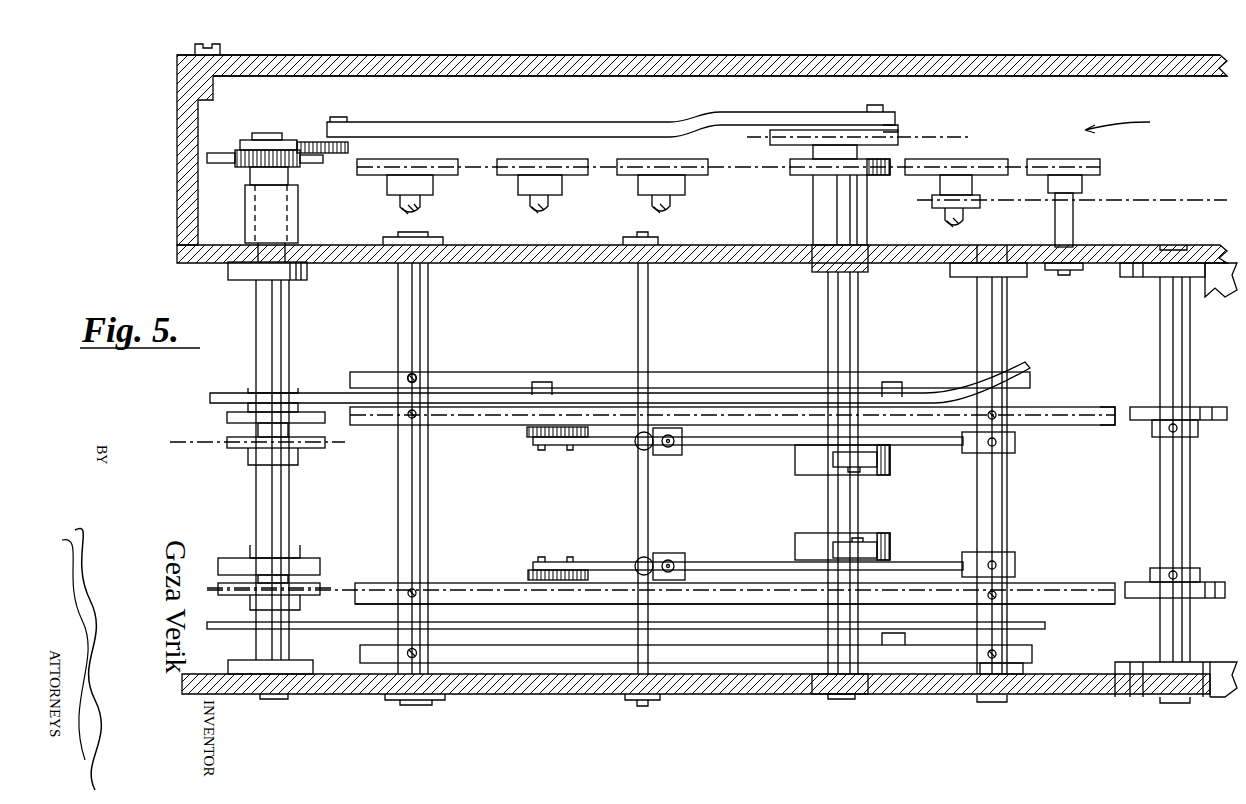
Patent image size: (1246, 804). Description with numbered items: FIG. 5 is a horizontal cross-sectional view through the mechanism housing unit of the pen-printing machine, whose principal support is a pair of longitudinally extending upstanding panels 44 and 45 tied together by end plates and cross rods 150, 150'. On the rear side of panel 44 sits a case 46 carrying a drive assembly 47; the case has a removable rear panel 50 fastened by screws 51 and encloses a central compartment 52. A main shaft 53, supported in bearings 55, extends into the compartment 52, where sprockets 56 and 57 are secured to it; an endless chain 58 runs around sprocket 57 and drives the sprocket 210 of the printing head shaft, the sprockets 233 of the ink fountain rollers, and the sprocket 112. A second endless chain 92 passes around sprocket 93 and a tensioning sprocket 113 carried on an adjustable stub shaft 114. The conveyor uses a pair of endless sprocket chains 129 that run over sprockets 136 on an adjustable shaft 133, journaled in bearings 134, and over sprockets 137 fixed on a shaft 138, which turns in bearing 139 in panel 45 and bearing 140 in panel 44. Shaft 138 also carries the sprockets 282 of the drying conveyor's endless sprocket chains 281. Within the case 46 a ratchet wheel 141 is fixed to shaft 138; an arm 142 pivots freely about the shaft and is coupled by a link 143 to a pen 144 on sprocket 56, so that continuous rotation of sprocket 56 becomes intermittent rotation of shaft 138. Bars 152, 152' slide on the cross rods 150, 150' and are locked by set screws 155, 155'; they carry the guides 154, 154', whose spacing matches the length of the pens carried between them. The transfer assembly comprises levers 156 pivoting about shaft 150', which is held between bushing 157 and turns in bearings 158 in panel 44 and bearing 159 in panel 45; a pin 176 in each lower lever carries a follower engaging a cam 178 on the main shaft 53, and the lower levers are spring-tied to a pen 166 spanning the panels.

The case 46 is at (618, 56).
The removable rear panel 50 is at (401, 55).
The central compartment 52 is at (508, 86).
The screws 51 is at (216, 46).
The upstanding panel 44 is at (690, 263).
The upstanding panel 45 is at (710, 694).
The link 143 is at (600, 104).
The pen 144 is at (893, 98).
The sprocket 56 is at (770, 141).
The sprocket 57 is at (800, 176).
The bearings 55 is at (868, 268).
The endless chain 58 is at (727, 168).
The sprocket 233 is at (452, 176).
The sprocket 210 is at (500, 178).
The sprocket 112 is at (985, 160).
The sprocket 93 is at (975, 208).
The sprocket 113 is at (1080, 156).
The adjustable stub shaft 114 is at (1074, 232).
The endless chain 92 is at (1195, 200).
The drive assembly 47 is at (1134, 120).
The bearings 158 is at (990, 246).
The bearings 134 is at (1178, 250).
The arm 142 is at (308, 142).
The ratchet wheel 141 is at (240, 170).
The bearing 140 is at (290, 248).
The shaft 138 is at (282, 336).
The bearing 139 is at (266, 696).
The cross rods 150 is at (431, 484).
The pen 166 is at (638, 354).
The main shaft 53 is at (858, 340).
The shaft 150' is at (1025, 475).
The bearing 159 is at (1005, 702).
The adjustable shaft 133 is at (1160, 332).
The sprockets 137 is at (226, 418).
The sprockets 282 is at (312, 450).
The endless sprocket chains 281 is at (180, 446).
The bar 152' is at (690, 352).
The set screw 155' is at (453, 361).
The guide 154' is at (662, 377).
The endless sprocket chains 129 is at (1095, 426).
The sprockets 136 is at (1185, 407).
The bushing 157 is at (1020, 442).
The levers 156 is at (606, 447).
The cam 178 is at (890, 460).
The pin 176 is at (860, 474).
The bars 152 is at (626, 678).
The set screw 155 is at (384, 700).
The guides 154 is at (735, 673).